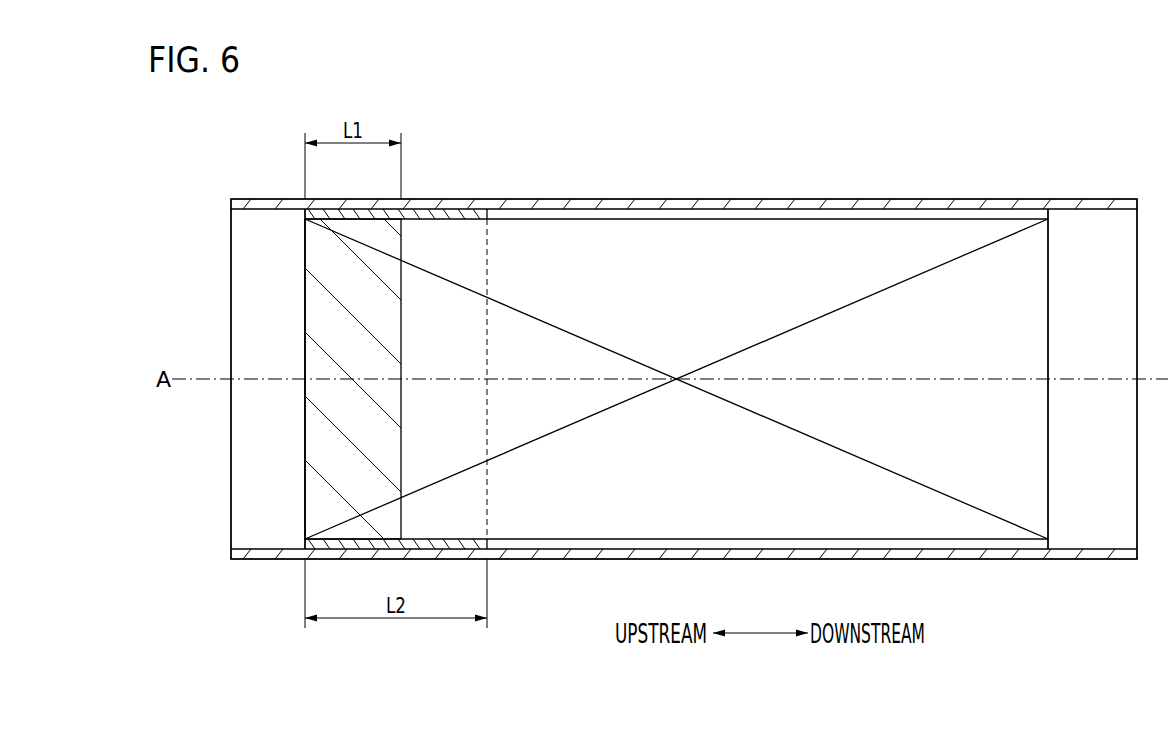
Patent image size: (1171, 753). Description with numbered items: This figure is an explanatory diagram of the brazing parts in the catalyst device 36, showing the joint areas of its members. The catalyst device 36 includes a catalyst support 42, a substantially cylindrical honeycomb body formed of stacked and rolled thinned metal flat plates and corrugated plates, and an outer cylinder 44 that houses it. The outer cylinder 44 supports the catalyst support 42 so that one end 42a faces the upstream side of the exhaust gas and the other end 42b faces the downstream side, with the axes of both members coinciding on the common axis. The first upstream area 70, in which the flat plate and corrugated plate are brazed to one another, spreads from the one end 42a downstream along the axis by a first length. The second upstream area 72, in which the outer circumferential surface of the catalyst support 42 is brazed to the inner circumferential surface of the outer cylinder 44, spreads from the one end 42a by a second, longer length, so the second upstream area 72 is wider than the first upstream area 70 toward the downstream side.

The catalyst device 36 is at (565, 125).
The outer cylinder 44 is at (679, 198).
The catalyst support 42 is at (774, 238).
The one end of the catalyst support 42a is at (305, 313).
The other end of the catalyst support 42b is at (1050, 452).
The first upstream area 70 is at (401, 103).
The second upstream area 72 is at (487, 641).